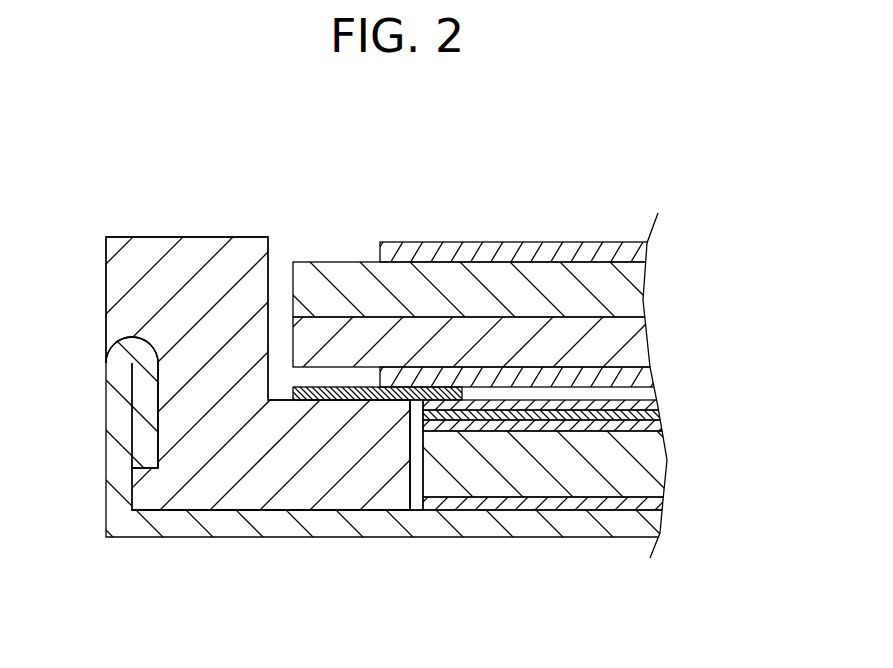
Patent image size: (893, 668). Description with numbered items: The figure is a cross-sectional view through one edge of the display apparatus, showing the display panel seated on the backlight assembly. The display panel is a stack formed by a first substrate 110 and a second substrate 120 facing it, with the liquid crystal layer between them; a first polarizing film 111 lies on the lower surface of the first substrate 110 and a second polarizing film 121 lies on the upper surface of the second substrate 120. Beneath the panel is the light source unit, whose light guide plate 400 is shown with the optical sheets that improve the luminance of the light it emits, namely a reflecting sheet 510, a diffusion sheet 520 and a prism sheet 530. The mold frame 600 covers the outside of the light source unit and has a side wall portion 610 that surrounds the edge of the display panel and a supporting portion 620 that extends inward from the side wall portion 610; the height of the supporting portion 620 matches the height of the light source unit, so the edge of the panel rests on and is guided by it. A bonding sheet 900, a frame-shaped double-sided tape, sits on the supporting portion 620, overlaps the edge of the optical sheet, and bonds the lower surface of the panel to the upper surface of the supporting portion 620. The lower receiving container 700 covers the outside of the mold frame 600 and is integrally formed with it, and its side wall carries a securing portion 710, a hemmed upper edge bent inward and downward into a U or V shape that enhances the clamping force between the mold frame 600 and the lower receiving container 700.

The first substrate 110 is at (642, 343).
The first polarizing film 111 is at (650, 382).
The second substrate 120 is at (640, 290).
The second polarizing film 121 is at (643, 253).
The light guide plate 400 is at (662, 460).
The reflecting sheet 510 is at (660, 505).
The diffusion sheet 520 is at (662, 428).
The prism sheet 530 is at (650, 401).
The mold frame 600 is at (357, 177).
The side wall portion 610 is at (195, 262).
The supporting portion 620 is at (333, 432).
The lower receiving container 700 is at (112, 469).
The securing portion 710 is at (148, 407).
The bonding sheet 900 is at (375, 388).